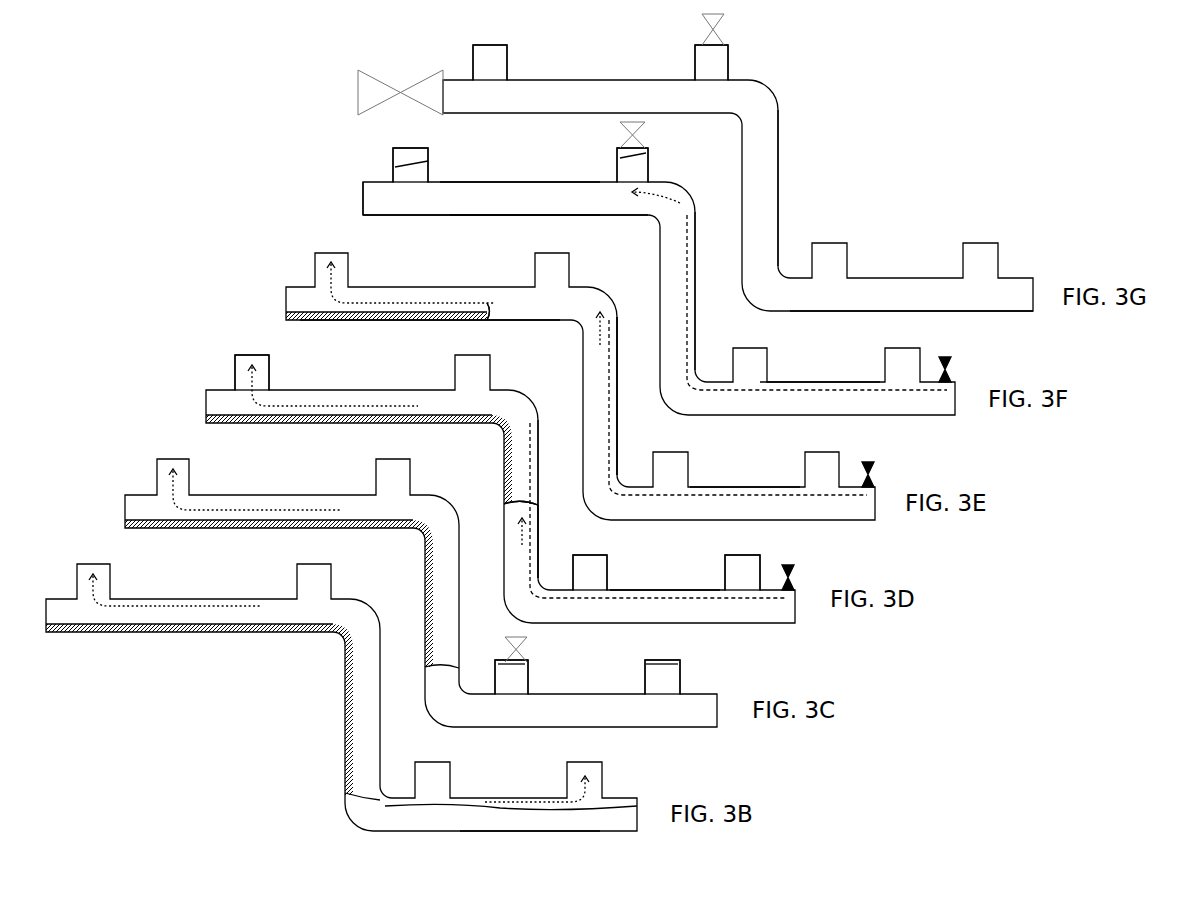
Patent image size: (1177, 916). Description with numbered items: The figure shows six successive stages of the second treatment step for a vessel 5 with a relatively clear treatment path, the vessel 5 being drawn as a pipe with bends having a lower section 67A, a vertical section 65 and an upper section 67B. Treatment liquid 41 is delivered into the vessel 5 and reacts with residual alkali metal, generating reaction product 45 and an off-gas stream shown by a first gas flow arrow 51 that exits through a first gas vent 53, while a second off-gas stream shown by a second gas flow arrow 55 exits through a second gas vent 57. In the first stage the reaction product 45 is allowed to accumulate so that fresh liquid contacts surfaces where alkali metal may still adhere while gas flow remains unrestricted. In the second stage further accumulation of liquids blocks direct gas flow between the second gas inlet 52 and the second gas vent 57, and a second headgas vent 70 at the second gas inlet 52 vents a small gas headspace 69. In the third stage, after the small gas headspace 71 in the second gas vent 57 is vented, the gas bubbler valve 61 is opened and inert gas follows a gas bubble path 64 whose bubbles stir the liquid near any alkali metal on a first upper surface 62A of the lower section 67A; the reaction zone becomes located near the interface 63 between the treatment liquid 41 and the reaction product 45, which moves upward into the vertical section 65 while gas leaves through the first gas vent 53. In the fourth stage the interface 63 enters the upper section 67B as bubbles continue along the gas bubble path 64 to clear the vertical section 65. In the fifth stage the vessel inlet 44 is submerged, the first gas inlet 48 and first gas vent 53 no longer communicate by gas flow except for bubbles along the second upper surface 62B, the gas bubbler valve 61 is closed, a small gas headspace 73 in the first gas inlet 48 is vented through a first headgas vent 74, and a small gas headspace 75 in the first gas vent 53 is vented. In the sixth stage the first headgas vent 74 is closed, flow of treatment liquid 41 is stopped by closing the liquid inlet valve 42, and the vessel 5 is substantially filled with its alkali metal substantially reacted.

In FIG. 3B, the vessel 5 is at (238, 599).
In FIG. 3C, the vessel 5 is at (320, 495).
In FIG. 3D, the vessel 5 is at (394, 390).
In FIG. 3E, the vessel 5 is at (599, 288).
In FIG. 3F, the vessel 5 is at (557, 182).
In FIG. 3G, the vessel 5 is at (626, 80).
In FIG. 3B, the treatment liquid 41 is at (136, 626).
In FIG. 3C, the treatment liquid 41 is at (216, 527).
In FIG. 3D, the treatment liquid 41 is at (294, 422).
In FIG. 3E, the treatment liquid 41 is at (372, 318).
In FIG. 3G, the liquid inlet valve 42 is at (362, 74).
In FIG. 3F, the vessel inlet 44 is at (370, 183).
In FIG. 3B, the reaction product 45 is at (450, 822).
In FIG. 3C, the reaction product 45 is at (530, 720).
In FIG. 3D, the reaction product 45 is at (612, 605).
In FIG. 3E, the reaction product 45 is at (702, 505).
In FIG. 3F, the reaction product 45 is at (484, 200).
In FIG. 3G, the reaction product 45 is at (846, 300).
In FIG. 3F, the first gas inlet 48 is at (616, 172).
In FIG. 3G, the first gas inlet 48 is at (692, 72).
In FIG. 3B, the first gas flow arrow 51 is at (184, 605).
In FIG. 3C, the first gas flow arrow 51 is at (264, 510).
In FIG. 3D, the first gas flow arrow 51 is at (340, 406).
In FIG. 3E, the first gas flow arrow 51 is at (416, 303).
In FIG. 3C, the second gas inlet 52 is at (530, 683).
In FIG. 3D, the second gas inlet 52 is at (608, 576).
In FIG. 3D, the first gas vent 53 is at (236, 376).
In FIG. 3F, the first gas vent 53 is at (432, 176).
In FIG. 3G, the first gas vent 53 is at (508, 76).
In FIG. 3B, the second gas flow arrow 55 is at (532, 801).
In FIG. 3C, the second gas vent 57 is at (646, 693).
In FIG. 3D, the second gas vent 57 is at (726, 586).
In FIG. 3D, the gas bubbler valve 61 is at (796, 572).
In FIG. 3E, the gas bubbler valve 61 is at (876, 468).
In FIG. 3F, the gas bubbler valve 61 is at (952, 364).
In FIG. 3D, the first upper surface 62A is at (650, 590).
In FIG. 3E, the first upper surface 62A is at (732, 487).
In FIG. 3F, the first upper surface 62A is at (808, 385).
In FIG. 3F, the second upper surface 62B is at (494, 182).
In FIG. 3D, the interface 63 is at (505, 504).
In FIG. 3E, the interface 63 is at (475, 318).
In FIG. 3D, the gas bubble path 64 is at (541, 537).
In FIG. 3E, the gas bubble path 64 is at (611, 438).
In FIG. 3F, the gas bubble path 64 is at (689, 333).
In FIG. 3D, the vertical section 65 is at (539, 480).
In FIG. 3E, the vertical section 65 is at (619, 385).
In FIG. 3B, the lower section 67A is at (528, 831).
In FIG. 3E, the upper section 67B is at (470, 287).
In FIG. 3F, the upper section 67B is at (505, 216).
In FIG. 3C, the small gas headspace 69 is at (510, 664).
In FIG. 3C, the second headgas vent 70 is at (512, 640).
In FIG. 3C, the small gas headspace 71 is at (674, 664).
In FIG. 3F, the small gas headspace 73 is at (632, 156).
In FIG. 3F, the first headgas vent 74 is at (625, 133).
In FIG. 3G, the first headgas vent 74 is at (710, 26).
In FIG. 3F, the small gas headspace 75 is at (412, 156).